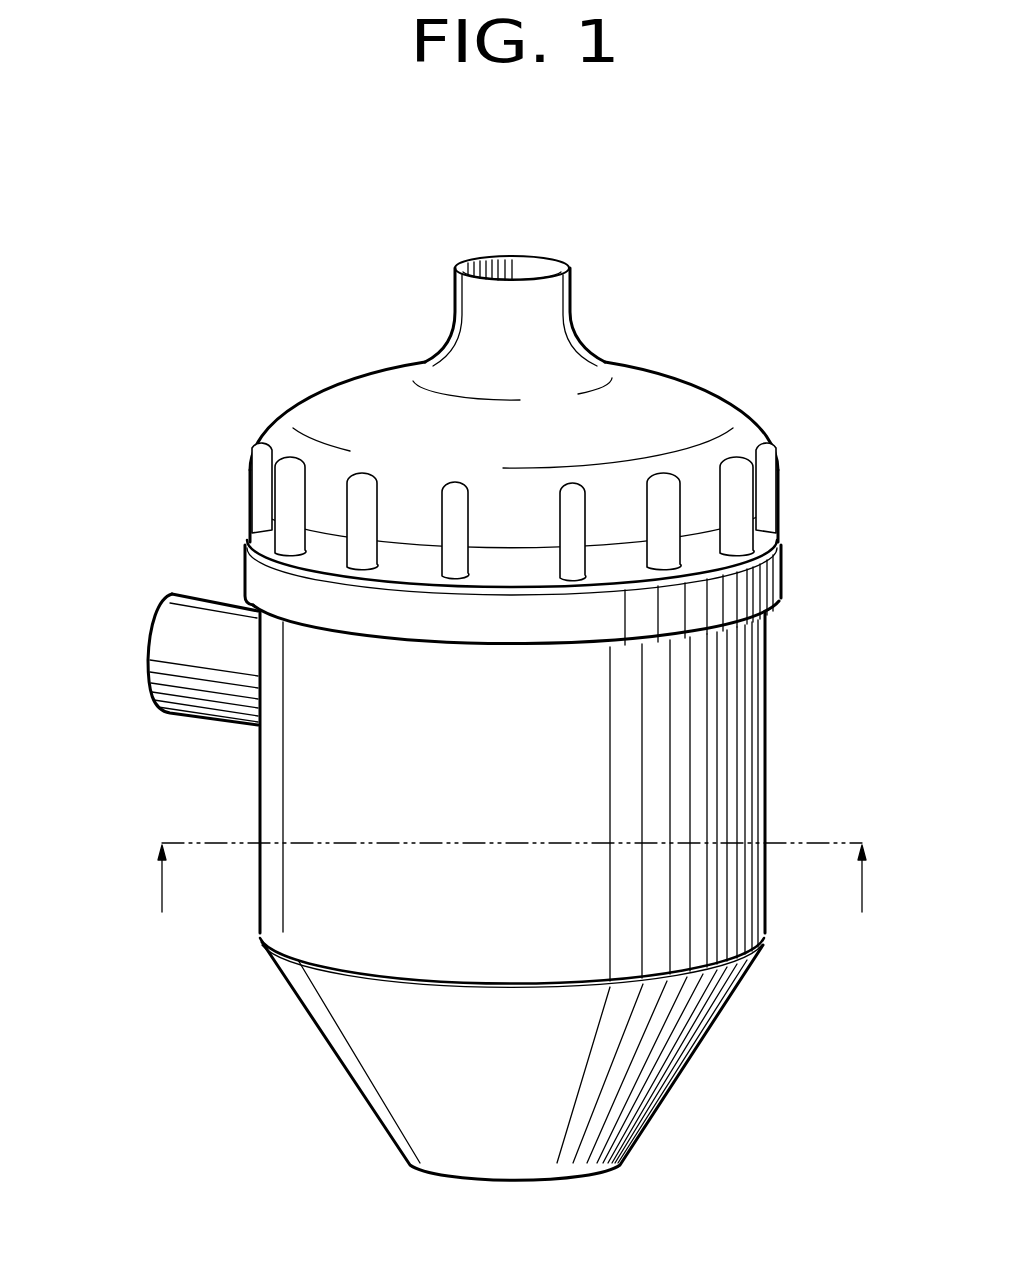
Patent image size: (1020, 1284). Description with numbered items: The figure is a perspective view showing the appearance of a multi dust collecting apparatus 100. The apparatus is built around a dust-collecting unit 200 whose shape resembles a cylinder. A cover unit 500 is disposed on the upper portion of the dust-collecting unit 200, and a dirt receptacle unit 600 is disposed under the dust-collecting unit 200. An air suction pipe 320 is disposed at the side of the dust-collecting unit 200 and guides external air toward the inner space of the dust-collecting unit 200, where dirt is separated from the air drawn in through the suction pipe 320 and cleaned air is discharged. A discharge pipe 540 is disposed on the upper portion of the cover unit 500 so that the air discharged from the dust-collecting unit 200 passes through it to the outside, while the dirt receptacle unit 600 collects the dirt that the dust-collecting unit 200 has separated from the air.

The multi dust collecting apparatus 100 is at (290, 296).
The dust-collecting unit 200 is at (775, 700).
The air suction pipe 320 is at (166, 618).
The cover unit 500 is at (700, 362).
The discharge pipe 540 is at (572, 292).
The dirt receptacle unit 600 is at (703, 1050).